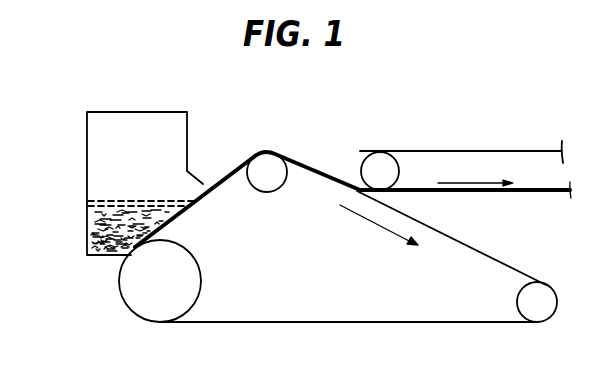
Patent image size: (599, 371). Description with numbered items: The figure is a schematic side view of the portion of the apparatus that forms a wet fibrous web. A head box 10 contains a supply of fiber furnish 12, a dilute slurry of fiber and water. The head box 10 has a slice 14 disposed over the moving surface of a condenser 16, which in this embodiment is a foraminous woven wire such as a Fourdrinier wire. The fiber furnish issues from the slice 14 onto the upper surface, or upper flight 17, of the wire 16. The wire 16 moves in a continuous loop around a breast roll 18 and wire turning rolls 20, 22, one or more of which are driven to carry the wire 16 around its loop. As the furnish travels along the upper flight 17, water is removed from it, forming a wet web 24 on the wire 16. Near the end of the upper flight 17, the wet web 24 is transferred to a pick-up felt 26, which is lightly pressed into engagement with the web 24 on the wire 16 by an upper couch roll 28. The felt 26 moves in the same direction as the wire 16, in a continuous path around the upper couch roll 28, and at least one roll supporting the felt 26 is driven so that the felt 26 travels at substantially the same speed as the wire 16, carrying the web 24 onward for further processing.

The head box 10 is at (177, 112).
The fiber furnish 12 is at (95, 222).
The slice 14 is at (201, 196).
The condenser 16 is at (331, 323).
The upper flight 17 is at (316, 173).
The breast roll 18 is at (165, 320).
The wire turning roll 20 is at (270, 153).
The wire turning roll 22 is at (540, 318).
The wet web 24 is at (311, 167).
The pick-up felt 26 is at (509, 151).
The upper couch roll 28 is at (380, 153).